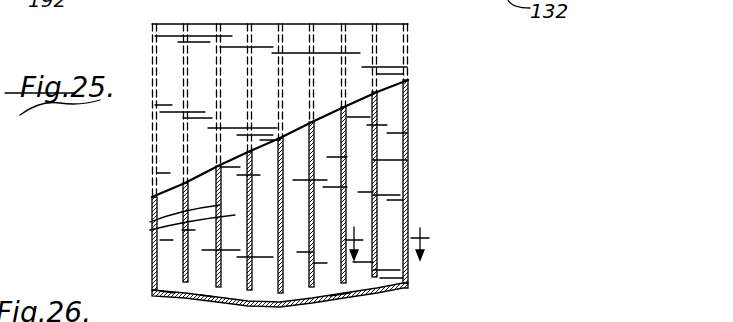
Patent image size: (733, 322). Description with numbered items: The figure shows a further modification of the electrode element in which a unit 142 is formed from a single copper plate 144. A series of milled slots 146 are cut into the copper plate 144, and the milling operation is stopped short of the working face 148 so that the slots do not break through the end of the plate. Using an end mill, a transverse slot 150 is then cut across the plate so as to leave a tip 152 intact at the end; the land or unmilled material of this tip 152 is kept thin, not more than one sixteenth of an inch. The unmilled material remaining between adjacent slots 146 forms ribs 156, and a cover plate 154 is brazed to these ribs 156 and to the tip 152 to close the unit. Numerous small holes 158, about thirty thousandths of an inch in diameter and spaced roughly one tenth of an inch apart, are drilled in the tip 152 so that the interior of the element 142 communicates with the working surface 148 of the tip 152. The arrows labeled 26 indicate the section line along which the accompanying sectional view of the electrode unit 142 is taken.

The electrode unit 142 is at (146, 128).
The copper plate 144 is at (408, 114).
The milled slots 146 is at (332, 157).
The working face 148 is at (268, 308).
The transverse slot 150 is at (207, 296).
The tip 152 is at (182, 293).
The cover plate 154 is at (327, 61).
The ribs 156 is at (240, 224).
The small holes 158 is at (340, 297).
The section line 26- 26 is at (394, 230).